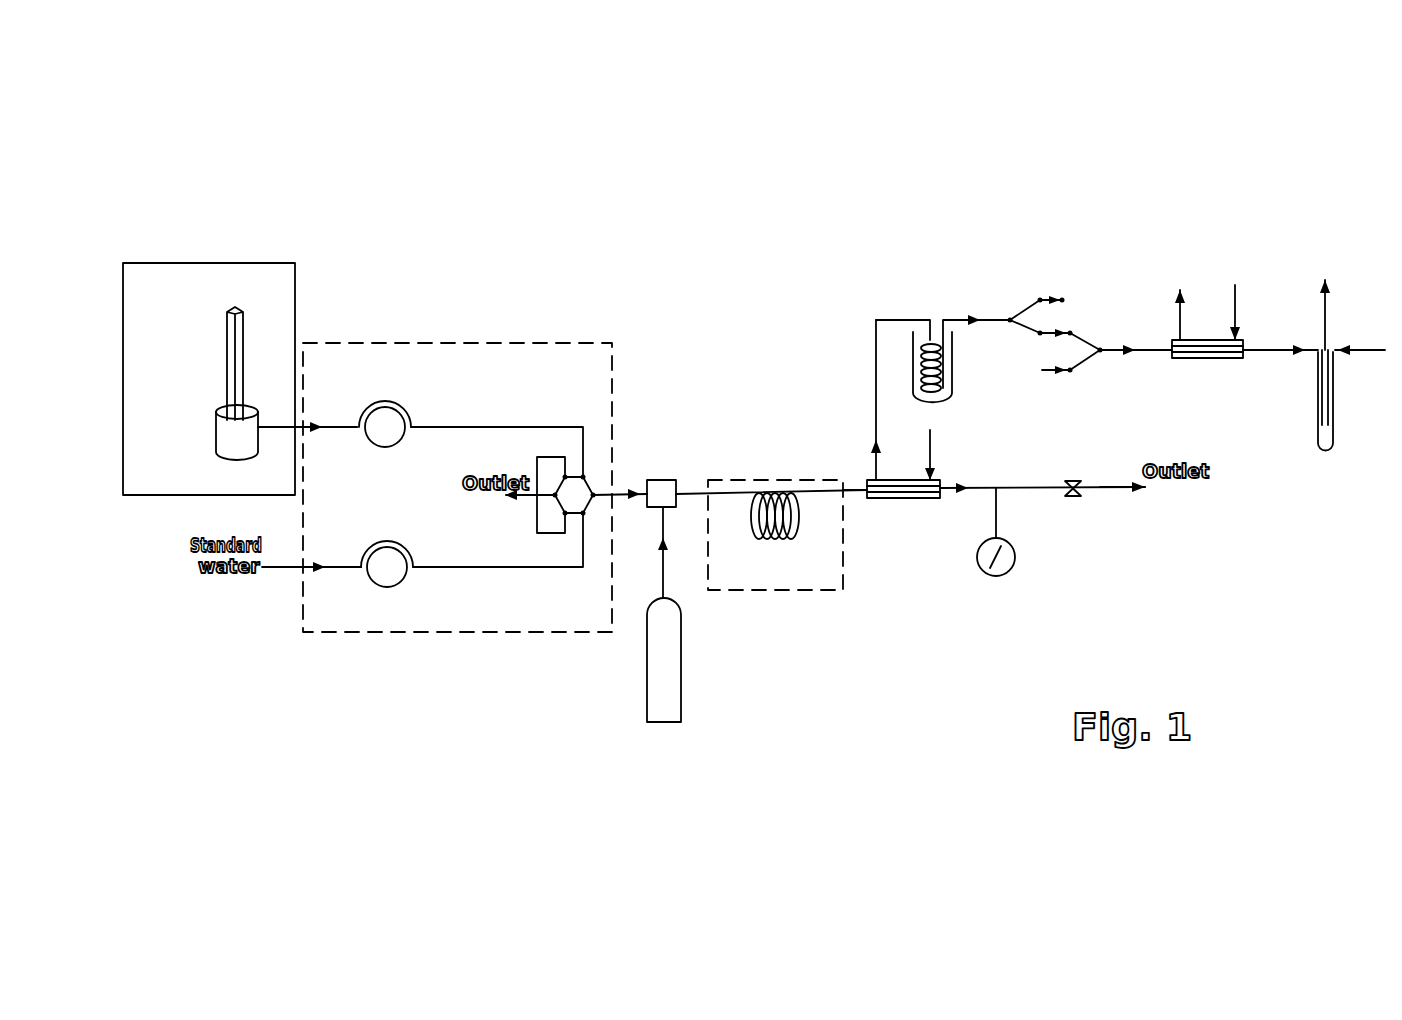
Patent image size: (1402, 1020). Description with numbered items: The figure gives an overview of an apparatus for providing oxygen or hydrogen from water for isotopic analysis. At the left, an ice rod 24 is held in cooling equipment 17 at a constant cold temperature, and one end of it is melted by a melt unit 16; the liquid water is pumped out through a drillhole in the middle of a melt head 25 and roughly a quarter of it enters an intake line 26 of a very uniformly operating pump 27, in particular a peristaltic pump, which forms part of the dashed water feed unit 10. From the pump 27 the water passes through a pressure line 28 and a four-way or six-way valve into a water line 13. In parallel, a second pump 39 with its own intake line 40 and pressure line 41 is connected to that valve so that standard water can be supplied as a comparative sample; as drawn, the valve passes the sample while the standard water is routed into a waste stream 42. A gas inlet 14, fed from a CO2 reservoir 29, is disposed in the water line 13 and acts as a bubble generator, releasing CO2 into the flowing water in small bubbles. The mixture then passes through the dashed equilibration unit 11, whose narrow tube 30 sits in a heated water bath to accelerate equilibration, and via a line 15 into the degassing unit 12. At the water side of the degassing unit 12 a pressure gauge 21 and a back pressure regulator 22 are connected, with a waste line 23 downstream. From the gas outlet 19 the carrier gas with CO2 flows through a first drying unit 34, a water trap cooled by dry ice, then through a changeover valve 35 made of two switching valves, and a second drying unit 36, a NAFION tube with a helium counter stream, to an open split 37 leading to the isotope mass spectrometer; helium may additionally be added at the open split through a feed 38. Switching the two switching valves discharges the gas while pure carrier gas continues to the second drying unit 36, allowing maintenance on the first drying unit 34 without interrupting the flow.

The water feed unit 10 is at (511, 343).
The equilibration unit 11 is at (787, 480).
The degassing unit 12 is at (917, 560).
The water line 13 is at (612, 490).
The gas inlet 14 is at (667, 507).
The line 15 is at (860, 480).
The melt unit 16 is at (220, 437).
The cooling equipment 17 is at (203, 263).
The gas outlet 19 is at (875, 348).
The pressure gauge 21 is at (1015, 560).
The back pressure regulator 22 is at (1073, 480).
The waste line 23 is at (1118, 490).
The ice rod 24 is at (239, 331).
The melt head 25 is at (251, 398).
The intake line 26 is at (342, 427).
The pump 27 is at (394, 424).
The pressure line 28 is at (548, 425).
The CO2 reservoir 29 is at (670, 700).
The narrow tube 30 is at (799, 527).
The first drying unit 34 is at (931, 262).
The changeover valve 35 is at (1086, 262).
The second drying unit 36 is at (1216, 262).
The open split 37 is at (1331, 510).
The feed 38 is at (1366, 349).
The pump 39 is at (383, 575).
The intake line 40 is at (343, 567).
The pressure line 41 is at (558, 568).
The waste stream 42 is at (533, 505).